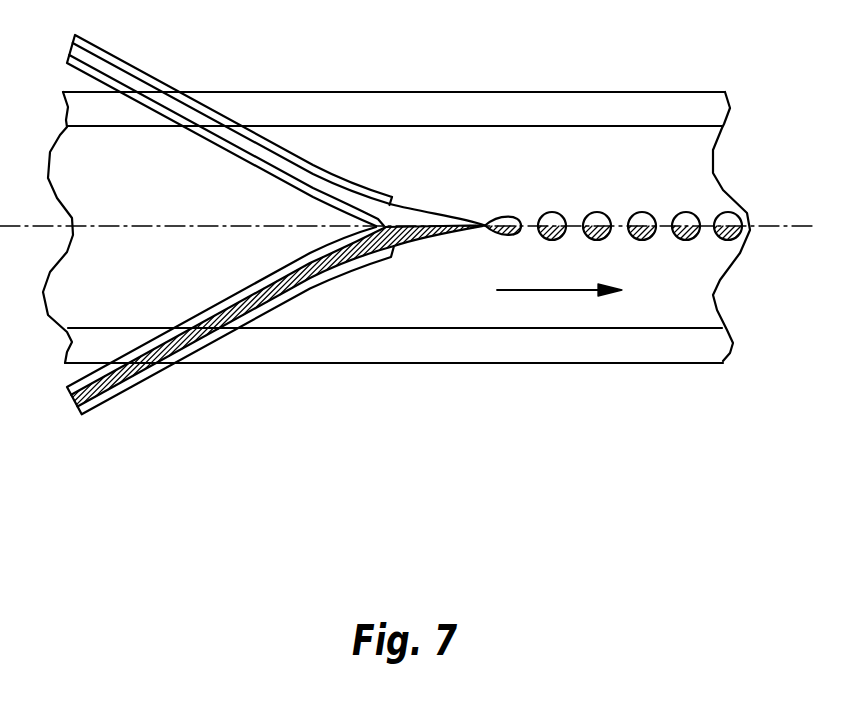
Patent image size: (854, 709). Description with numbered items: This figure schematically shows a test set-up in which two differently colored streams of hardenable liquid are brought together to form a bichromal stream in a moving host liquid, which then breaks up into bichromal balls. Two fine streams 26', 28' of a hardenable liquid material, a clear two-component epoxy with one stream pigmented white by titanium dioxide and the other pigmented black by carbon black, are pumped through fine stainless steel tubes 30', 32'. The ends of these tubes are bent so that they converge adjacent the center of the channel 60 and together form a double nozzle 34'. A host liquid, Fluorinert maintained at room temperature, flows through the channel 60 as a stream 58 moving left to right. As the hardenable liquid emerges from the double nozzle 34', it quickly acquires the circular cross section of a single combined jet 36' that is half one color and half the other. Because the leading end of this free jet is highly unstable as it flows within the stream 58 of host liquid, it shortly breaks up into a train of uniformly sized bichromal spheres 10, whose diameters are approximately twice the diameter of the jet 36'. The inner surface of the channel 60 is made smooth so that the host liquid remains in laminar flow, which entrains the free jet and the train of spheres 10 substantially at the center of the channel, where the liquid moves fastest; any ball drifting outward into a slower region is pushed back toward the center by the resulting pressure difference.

The bichromal spheres 10 is at (597, 213).
The fine stream of hardenable liquid 26' is at (229, 128).
The fine stream of hardenable liquid 28' is at (230, 331).
The fine tube 30' is at (277, 134).
The fine tube 32' is at (232, 317).
The double nozzle 34' is at (400, 119).
The combined jet 36' is at (439, 205).
The stream of host liquid 58 is at (463, 313).
The channel 60 is at (590, 348).